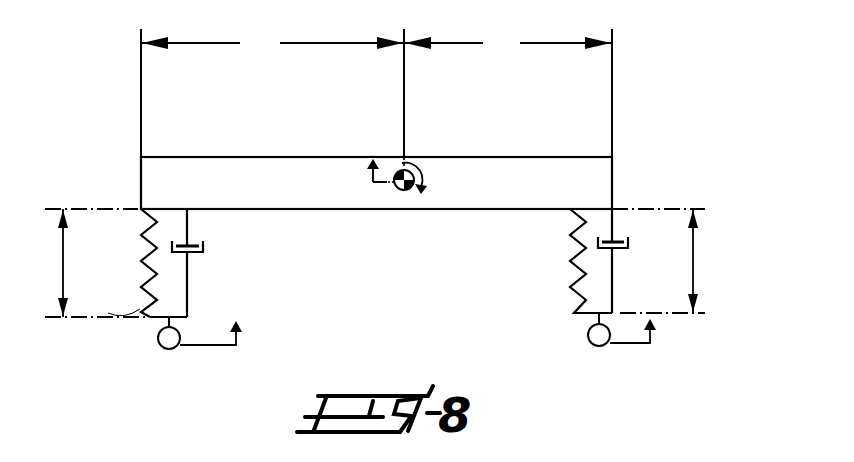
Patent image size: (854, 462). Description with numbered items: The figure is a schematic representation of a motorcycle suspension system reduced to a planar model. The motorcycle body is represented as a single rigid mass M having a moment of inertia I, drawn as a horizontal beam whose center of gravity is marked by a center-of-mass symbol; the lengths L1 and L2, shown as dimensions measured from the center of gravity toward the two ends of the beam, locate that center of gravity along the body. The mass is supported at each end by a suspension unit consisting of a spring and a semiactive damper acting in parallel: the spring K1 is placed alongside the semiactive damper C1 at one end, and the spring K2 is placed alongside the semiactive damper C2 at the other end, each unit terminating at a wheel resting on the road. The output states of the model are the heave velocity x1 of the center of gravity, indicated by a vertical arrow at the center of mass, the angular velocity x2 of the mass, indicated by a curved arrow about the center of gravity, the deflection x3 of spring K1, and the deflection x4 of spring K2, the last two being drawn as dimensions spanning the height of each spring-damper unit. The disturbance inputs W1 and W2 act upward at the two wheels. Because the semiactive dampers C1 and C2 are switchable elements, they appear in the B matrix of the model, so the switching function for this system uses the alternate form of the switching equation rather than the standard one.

The mass M is at (376, 183).
The length L1 is at (272, 46).
The length L2 is at (508, 47).
The heave velocity output state x1 is at (361, 182).
The angular velocity output state x2 is at (432, 184).
The deflection of spring K1 x3 is at (65, 263).
The deflection of spring K2 x4 is at (695, 261).
The spring K1 is at (134, 263).
The spring K2 is at (572, 261).
The semiactive damper C1 is at (192, 263).
The semiactive damper C2 is at (628, 261).
The disturbance input W1 is at (217, 339).
The disturbance input W2 is at (640, 337).